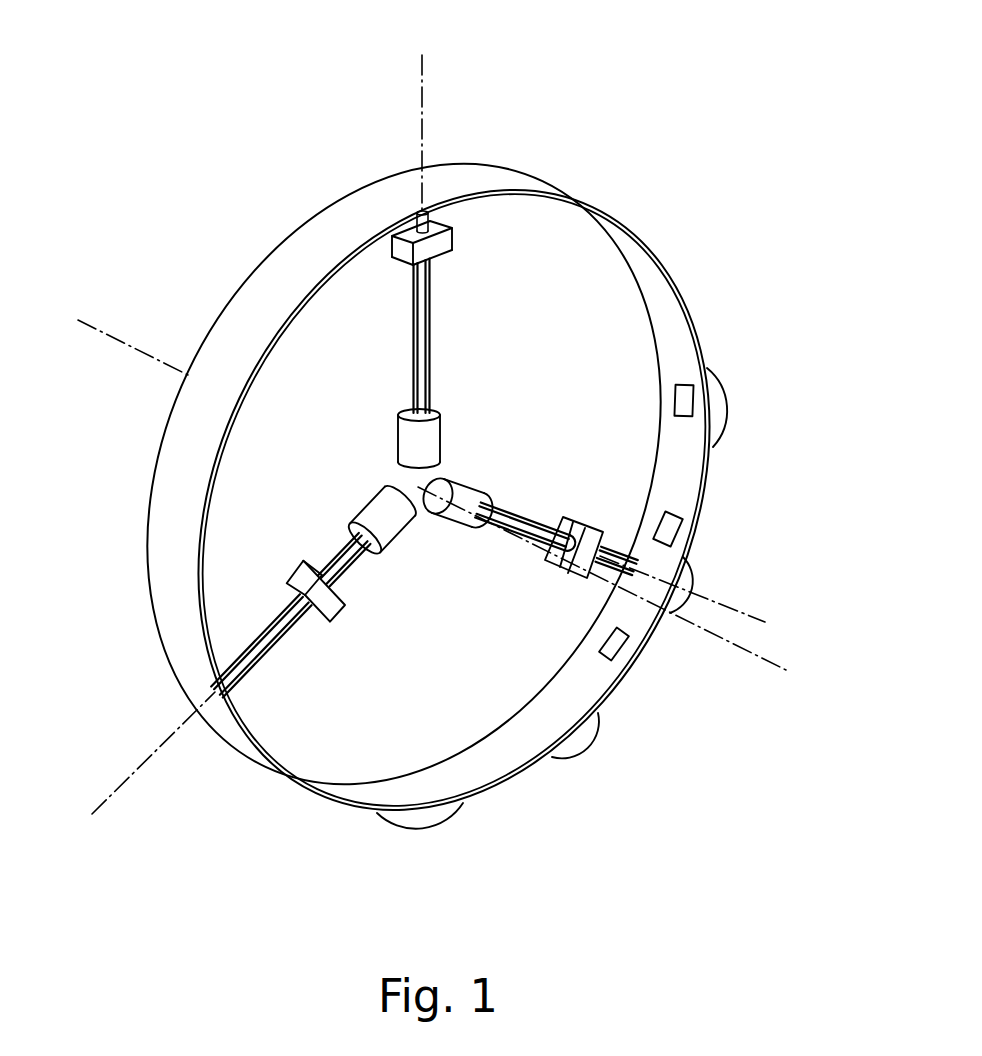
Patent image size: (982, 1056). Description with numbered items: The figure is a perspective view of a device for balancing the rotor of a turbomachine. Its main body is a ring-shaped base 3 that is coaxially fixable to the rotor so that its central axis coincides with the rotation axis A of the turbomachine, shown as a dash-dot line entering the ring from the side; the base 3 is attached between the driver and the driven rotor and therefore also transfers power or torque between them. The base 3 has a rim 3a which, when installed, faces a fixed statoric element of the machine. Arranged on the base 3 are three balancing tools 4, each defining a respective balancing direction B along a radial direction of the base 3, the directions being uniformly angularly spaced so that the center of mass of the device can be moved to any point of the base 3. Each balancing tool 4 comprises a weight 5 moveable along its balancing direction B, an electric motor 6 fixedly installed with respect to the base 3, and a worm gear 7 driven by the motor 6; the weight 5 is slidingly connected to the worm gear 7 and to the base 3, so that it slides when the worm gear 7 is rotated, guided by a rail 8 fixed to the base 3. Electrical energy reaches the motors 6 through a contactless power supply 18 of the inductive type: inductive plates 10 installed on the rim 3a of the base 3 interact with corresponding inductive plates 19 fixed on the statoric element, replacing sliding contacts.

The base 3 is at (632, 221).
The rim 3a is at (668, 266).
The balancing tool 4 is at (768, 580).
The weight 5 is at (110, 575).
The motor 6 is at (398, 440).
The worm gear 7 is at (212, 803).
The rail 8 is at (280, 830).
The inductive plate 10 is at (693, 396).
The contactless power supply 18 is at (571, 760).
The inductive plate 19 is at (727, 403).
The rotation axis A is at (88, 323).
The balancing direction B is at (428, 70).